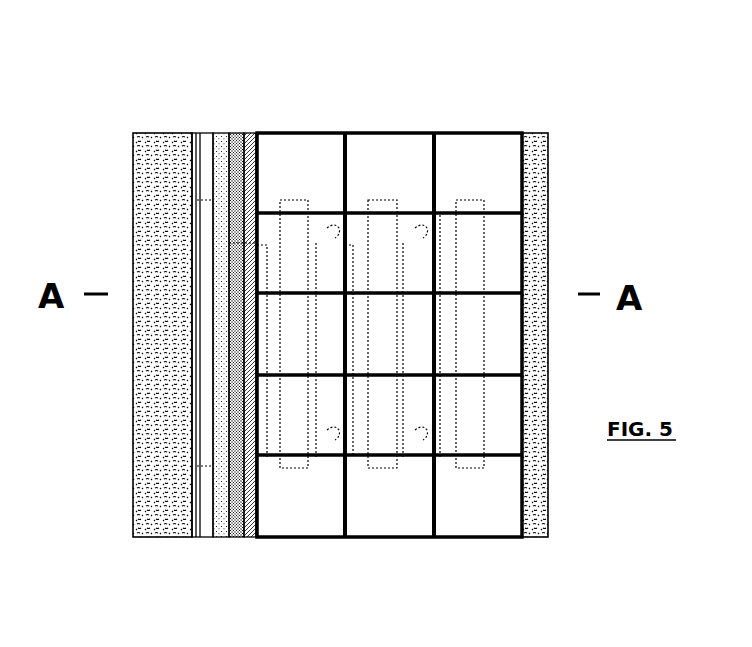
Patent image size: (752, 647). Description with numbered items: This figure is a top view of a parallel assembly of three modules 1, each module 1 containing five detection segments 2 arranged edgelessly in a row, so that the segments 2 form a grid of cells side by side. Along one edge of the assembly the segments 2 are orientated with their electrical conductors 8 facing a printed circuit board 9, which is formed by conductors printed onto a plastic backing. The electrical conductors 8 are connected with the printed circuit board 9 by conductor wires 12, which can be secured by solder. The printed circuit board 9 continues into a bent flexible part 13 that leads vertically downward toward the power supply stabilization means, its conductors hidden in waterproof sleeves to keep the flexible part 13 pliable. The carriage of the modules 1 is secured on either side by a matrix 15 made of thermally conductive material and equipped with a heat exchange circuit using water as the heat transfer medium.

The module 1 is at (296, 543).
The detection segment 2 is at (353, 339).
The electrical conductor 8 is at (252, 132).
The printed circuit board 9 is at (219, 132).
The conductor wire 12 is at (237, 132).
The flexible part 13 is at (205, 538).
The matrix 15 is at (152, 538).